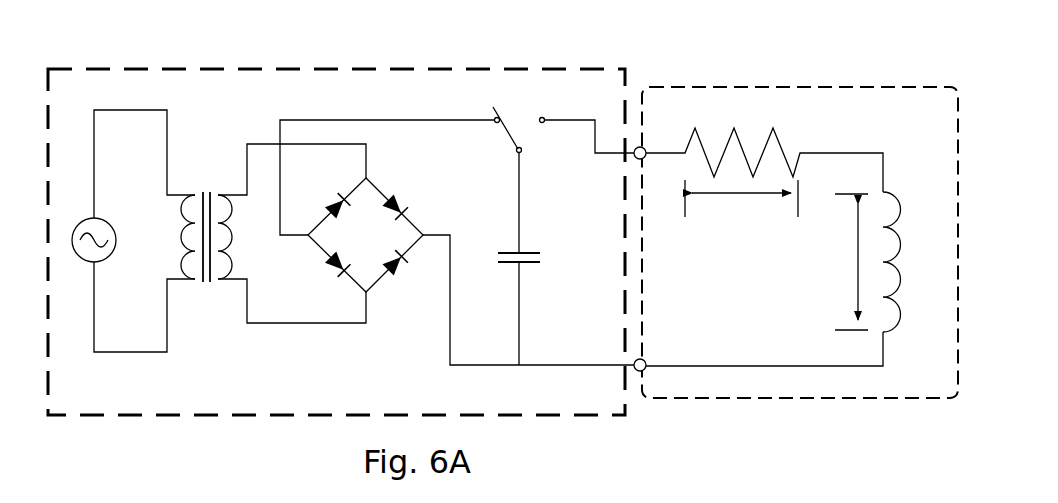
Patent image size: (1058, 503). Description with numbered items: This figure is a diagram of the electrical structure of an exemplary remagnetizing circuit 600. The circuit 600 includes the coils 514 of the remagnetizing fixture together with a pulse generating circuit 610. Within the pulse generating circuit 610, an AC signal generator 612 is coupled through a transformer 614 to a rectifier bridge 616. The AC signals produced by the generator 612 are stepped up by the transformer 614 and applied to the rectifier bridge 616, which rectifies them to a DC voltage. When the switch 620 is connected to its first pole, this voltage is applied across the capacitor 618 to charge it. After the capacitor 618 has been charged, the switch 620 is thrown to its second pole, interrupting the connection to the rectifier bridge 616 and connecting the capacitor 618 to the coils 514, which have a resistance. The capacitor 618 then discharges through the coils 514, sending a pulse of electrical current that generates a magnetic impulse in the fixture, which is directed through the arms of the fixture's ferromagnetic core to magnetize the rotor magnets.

The circuit 600 is at (690, 40).
The pulse generating circuit 610 is at (208, 416).
The AC signal generator 612 is at (106, 258).
The transformer 614 is at (210, 290).
The rectifier bridge 616 is at (414, 294).
The capacitor 618 is at (542, 279).
The switch 620 is at (527, 111).
The coils 514 is at (920, 323).